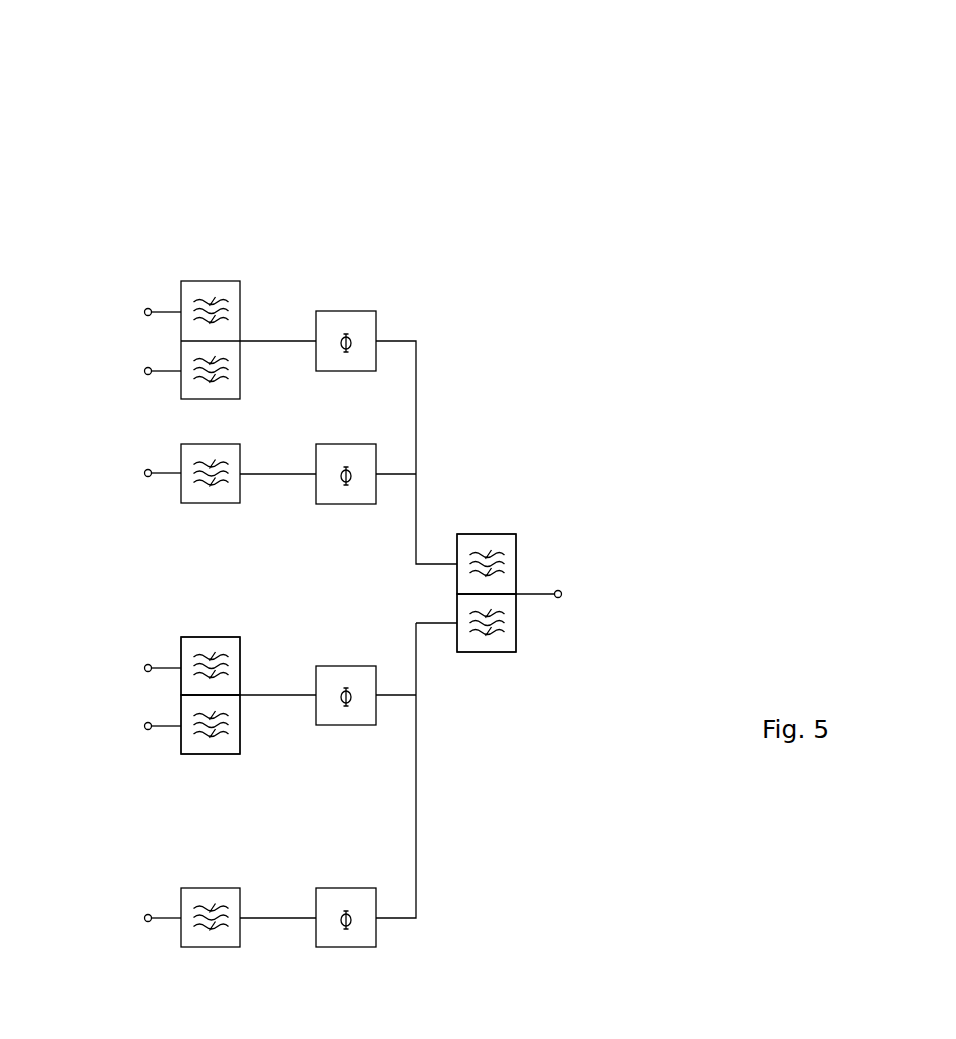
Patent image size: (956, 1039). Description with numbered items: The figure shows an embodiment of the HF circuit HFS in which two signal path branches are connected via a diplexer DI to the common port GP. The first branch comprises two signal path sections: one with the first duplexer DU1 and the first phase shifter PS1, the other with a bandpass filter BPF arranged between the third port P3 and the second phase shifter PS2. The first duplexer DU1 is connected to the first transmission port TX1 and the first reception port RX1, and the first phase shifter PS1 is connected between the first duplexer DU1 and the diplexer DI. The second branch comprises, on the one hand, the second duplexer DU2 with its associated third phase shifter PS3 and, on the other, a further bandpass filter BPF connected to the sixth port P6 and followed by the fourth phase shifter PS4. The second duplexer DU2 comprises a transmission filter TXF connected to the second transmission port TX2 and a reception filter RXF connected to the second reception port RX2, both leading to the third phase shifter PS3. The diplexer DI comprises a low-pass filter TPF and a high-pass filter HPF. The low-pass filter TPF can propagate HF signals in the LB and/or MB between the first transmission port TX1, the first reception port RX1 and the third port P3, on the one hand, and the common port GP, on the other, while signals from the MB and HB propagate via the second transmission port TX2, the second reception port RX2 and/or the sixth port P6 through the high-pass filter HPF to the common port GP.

The HF circuit HFS is at (580, 63).
The first duplexer DU1 is at (262, 273).
The second duplexer DU2 is at (153, 761).
The first transmission port TX1 is at (145, 311).
The first reception port RX1 is at (145, 370).
The second transmission port TX2 is at (145, 667).
The second reception port RX2 is at (145, 725).
The third port P3 is at (145, 472).
The sixth port P6 is at (145, 917).
The bandpass filter BPF is at (242, 457).
The first phase shifter PS1 is at (337, 311).
The second phase shifter PS2 is at (358, 503).
The third phase shifter PS3 is at (355, 666).
The fourth phase shifter PS4 is at (358, 947).
The transmission filter TXF is at (187, 637).
The reception filter RXF is at (240, 722).
The diplexer DI is at (547, 543).
The low-pass filter TPF is at (473, 534).
The high-pass filter HPF is at (505, 652).
The common port GP is at (562, 595).